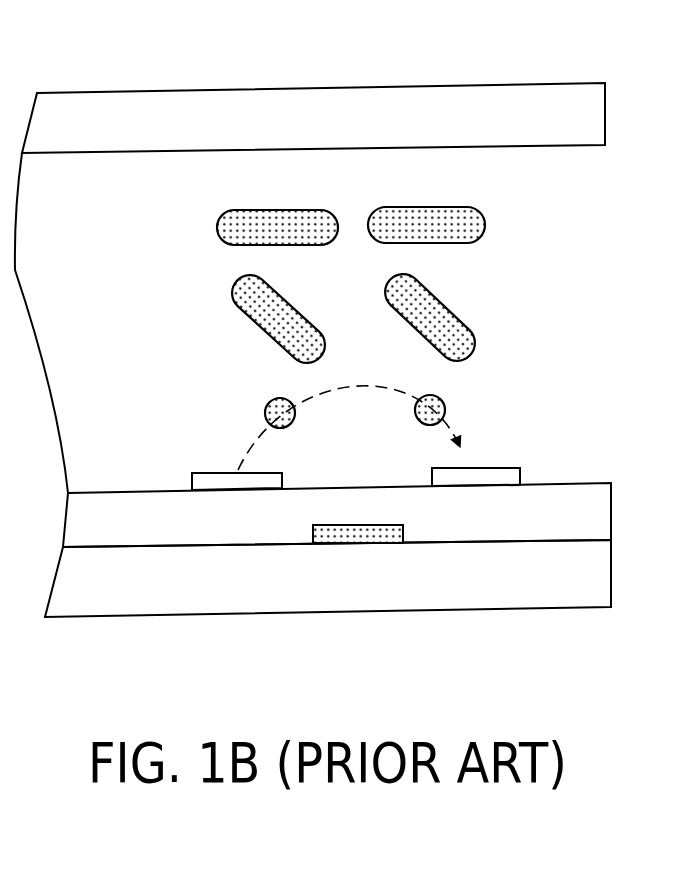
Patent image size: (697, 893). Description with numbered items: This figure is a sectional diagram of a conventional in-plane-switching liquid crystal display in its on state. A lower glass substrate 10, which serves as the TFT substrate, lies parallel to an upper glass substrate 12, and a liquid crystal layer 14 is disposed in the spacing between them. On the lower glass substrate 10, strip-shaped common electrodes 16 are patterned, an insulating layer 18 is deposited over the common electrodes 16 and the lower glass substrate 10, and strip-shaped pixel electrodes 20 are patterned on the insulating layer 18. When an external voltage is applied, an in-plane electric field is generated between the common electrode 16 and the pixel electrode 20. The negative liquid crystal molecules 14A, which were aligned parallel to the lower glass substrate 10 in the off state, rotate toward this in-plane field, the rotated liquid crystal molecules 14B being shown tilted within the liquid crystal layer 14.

The upper glass substrate 12 is at (595, 113).
The negative liquid crystal molecules 14A is at (485, 225).
The liquid crystal molecules 14B is at (432, 318).
The liquid crystal layer 14 is at (567, 340).
The pixel electrodes 20 is at (513, 473).
The insulating layer 18 is at (600, 515).
The lower glass substrate 10 is at (602, 574).
The common electrodes 16 is at (363, 543).